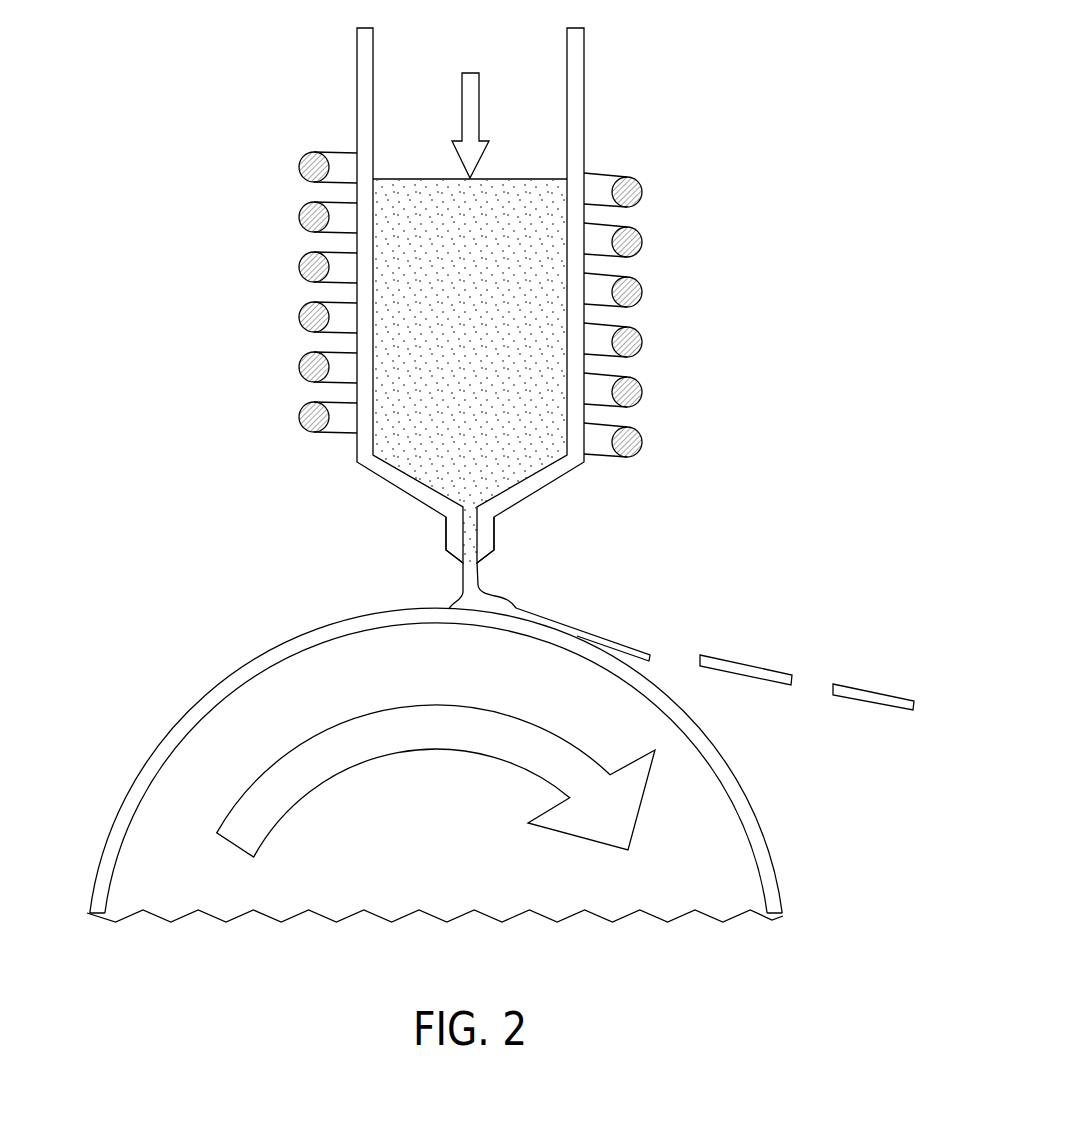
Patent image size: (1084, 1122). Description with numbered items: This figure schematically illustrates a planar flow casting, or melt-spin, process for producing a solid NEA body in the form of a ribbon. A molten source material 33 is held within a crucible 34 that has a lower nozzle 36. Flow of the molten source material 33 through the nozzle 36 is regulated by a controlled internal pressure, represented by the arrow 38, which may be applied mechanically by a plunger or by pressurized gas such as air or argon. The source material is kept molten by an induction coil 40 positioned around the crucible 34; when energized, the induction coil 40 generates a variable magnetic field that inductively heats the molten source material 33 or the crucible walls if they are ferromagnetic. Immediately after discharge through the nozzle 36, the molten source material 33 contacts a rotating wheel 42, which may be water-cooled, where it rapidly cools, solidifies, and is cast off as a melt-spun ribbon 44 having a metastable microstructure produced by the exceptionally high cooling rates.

The molten source material 33 is at (427, 193).
The crucible 34 is at (357, 78).
The nozzle 36 is at (446, 532).
The arrow 38 is at (480, 78).
The induction coil 40 is at (642, 240).
The rotating wheel 42 is at (152, 757).
The melt-spun ribbon 44 is at (628, 643).